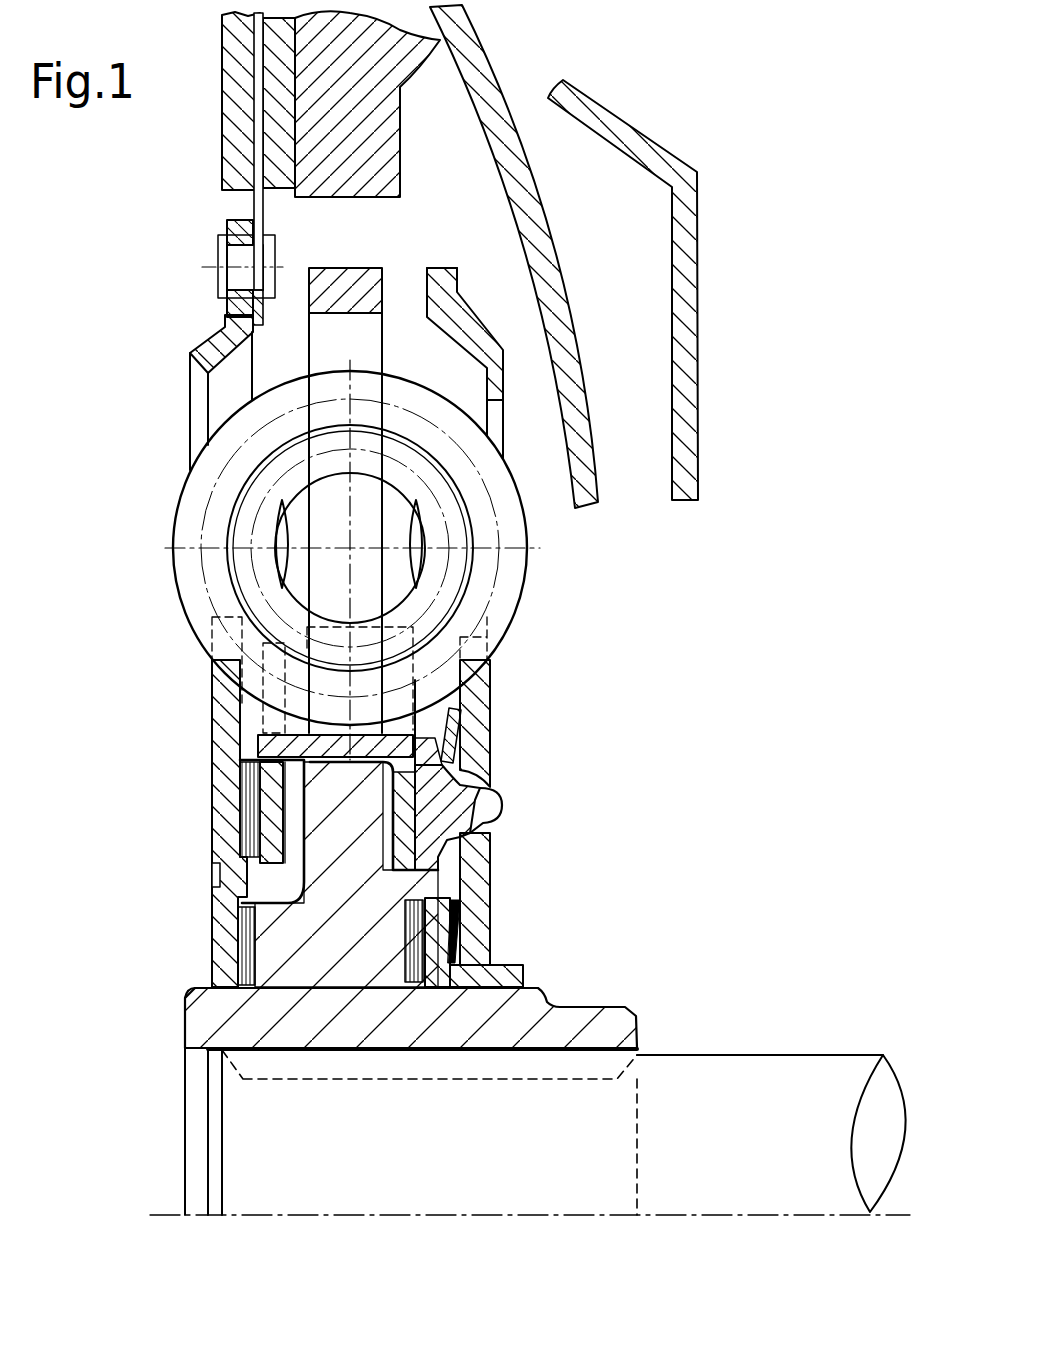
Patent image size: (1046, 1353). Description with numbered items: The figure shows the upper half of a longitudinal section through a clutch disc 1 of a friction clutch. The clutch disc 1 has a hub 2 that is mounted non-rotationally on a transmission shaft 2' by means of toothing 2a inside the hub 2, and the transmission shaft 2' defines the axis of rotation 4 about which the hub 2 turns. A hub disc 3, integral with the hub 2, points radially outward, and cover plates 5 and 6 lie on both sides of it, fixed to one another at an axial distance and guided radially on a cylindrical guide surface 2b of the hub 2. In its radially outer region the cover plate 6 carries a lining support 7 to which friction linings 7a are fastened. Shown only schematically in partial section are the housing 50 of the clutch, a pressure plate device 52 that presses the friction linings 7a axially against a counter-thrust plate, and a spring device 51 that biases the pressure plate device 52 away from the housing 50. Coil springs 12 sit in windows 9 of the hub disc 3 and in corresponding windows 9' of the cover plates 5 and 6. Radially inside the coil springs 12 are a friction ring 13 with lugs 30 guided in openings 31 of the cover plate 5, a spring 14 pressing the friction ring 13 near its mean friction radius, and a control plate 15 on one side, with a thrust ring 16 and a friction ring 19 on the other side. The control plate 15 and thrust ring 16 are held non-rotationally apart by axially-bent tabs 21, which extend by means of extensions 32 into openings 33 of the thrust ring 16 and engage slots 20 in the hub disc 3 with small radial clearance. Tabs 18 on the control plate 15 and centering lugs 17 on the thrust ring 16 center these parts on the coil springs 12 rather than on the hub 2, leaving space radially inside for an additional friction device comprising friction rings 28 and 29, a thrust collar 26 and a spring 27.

The clutch disc 1 is at (470, 253).
The hub 2 is at (411, 1053).
The toothing 2a is at (497, 1067).
The cylindrical guide surface 2b is at (195, 990).
The transmission shaft 2' is at (564, 1105).
The hub disc 3 is at (348, 283).
The axis of rotation 4 is at (455, 1216).
The cover plate 5 is at (443, 290).
The cover plate 6 is at (238, 312).
The lining support 7 is at (252, 168).
The friction linings 7a is at (233, 98).
The windows 9 is at (361, 294).
The windows 9' is at (337, 401).
The coil springs 12 is at (512, 578).
The friction ring 13 is at (487, 770).
The spring 14 is at (460, 737).
The control plate 15 is at (480, 853).
The thrust ring 16 is at (250, 805).
The centering lugs 17 is at (222, 706).
The tabs 18 is at (468, 693).
The friction ring 19 is at (250, 822).
The slots 20 is at (262, 906).
The axially-bent tabs 21 is at (265, 745).
The thrust collar 26 is at (507, 977).
The spring 27 is at (460, 928).
The friction ring 28 is at (207, 998).
The friction ring 29 is at (245, 955).
The lugs 30 is at (487, 812).
The openings 31 is at (487, 777).
The extensions 32 is at (273, 748).
The openings 33 is at (275, 790).
The housing 50 is at (697, 280).
The spring device 51 is at (569, 356).
The pressure plate device 52 is at (387, 127).